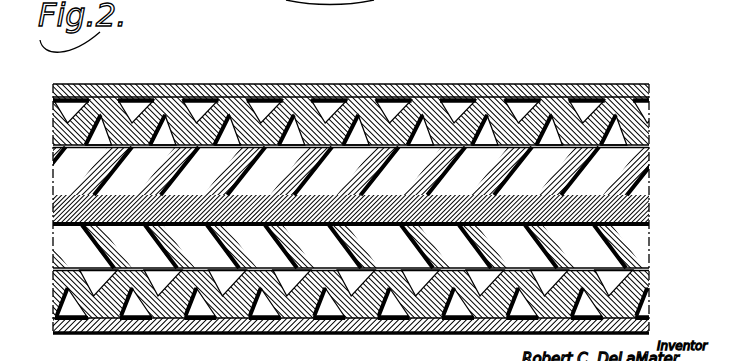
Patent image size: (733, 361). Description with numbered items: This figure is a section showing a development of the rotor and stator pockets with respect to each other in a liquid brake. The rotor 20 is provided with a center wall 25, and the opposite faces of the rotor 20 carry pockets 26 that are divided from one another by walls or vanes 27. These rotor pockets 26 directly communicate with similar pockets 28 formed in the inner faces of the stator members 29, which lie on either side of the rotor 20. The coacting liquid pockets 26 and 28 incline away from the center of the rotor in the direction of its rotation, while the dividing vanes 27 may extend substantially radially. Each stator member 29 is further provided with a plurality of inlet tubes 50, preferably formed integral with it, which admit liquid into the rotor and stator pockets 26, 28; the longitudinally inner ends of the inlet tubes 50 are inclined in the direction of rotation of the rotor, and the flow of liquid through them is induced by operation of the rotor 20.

The rotor 20 is at (650, 190).
The center wall 25 is at (366, 180).
The pockets 26 is at (366, 180).
The walls or vanes 27 is at (366, 180).
The pockets 28 is at (361, 198).
The stator members 29 is at (366, 180).
The inlet tubes 50 is at (366, 180).